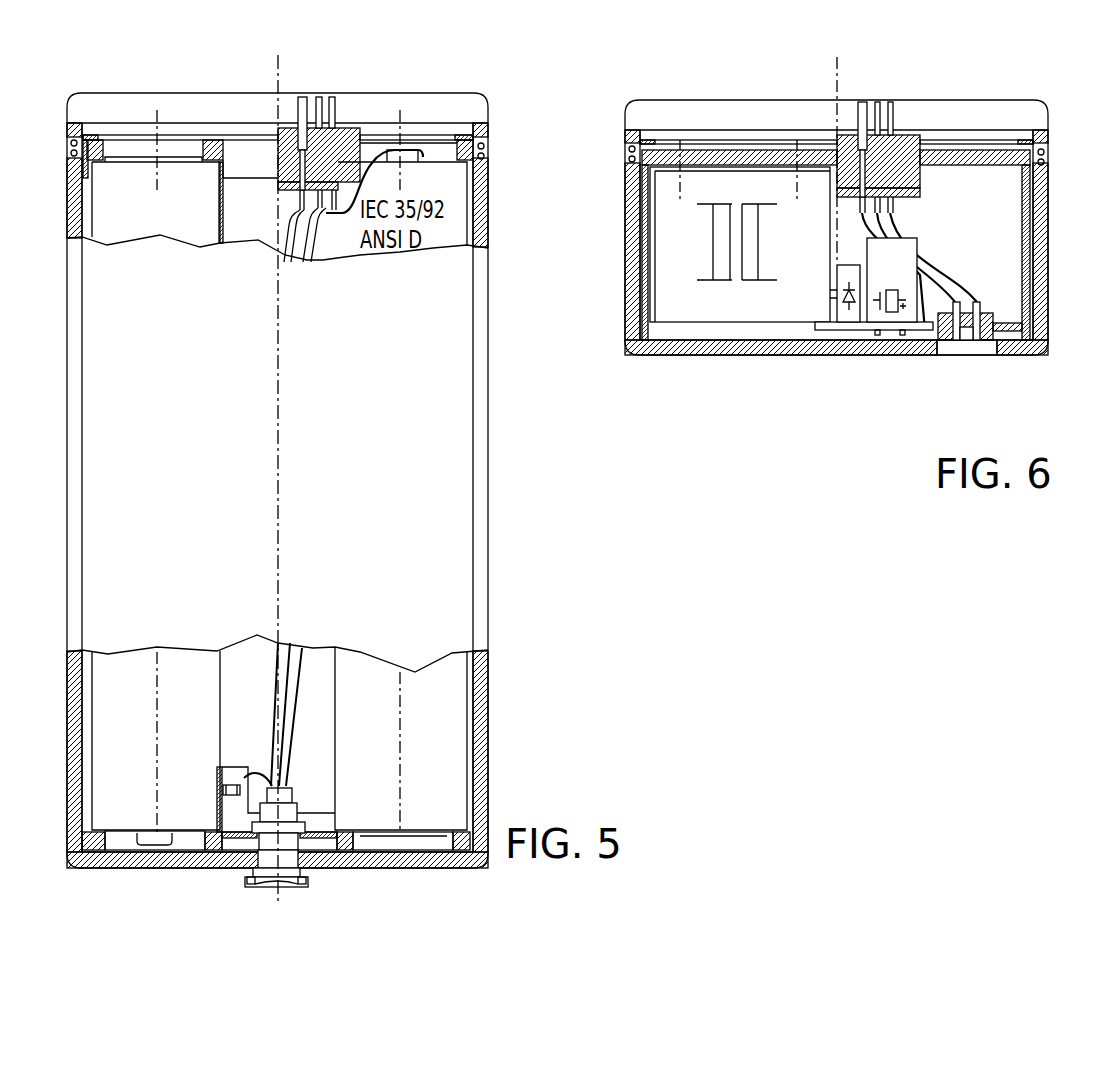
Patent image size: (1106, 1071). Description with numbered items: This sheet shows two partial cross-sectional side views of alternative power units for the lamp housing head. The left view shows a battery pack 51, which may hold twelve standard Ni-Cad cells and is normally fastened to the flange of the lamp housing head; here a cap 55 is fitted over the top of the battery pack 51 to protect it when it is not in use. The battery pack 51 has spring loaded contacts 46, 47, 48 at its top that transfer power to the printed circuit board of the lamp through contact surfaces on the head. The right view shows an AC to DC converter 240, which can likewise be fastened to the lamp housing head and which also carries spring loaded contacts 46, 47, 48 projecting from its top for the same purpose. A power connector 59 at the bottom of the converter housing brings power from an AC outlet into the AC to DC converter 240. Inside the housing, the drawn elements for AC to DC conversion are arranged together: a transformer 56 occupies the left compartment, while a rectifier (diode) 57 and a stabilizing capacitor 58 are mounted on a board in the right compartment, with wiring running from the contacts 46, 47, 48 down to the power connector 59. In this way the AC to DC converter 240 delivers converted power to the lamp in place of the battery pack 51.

In FIG. 5, the battery pack 51 is at (547, 257).
In FIG. 5, the cap 55 is at (466, 105).
In FIG. 6, the AC to DC converter 240 is at (656, 416).
In FIG. 6, the spring loaded contact 46 is at (858, 100).
In FIG. 6, the spring loaded contact 47 is at (877, 98).
In FIG. 6, the spring loaded contact 48 is at (890, 102).
In FIG. 6, the transformer 56 is at (701, 313).
In FIG. 6, the rectifier (diode) 57 is at (847, 332).
In FIG. 6, the stabilizing capacitor 58 is at (905, 272).
In FIG. 6, the power connector 59 is at (967, 337).